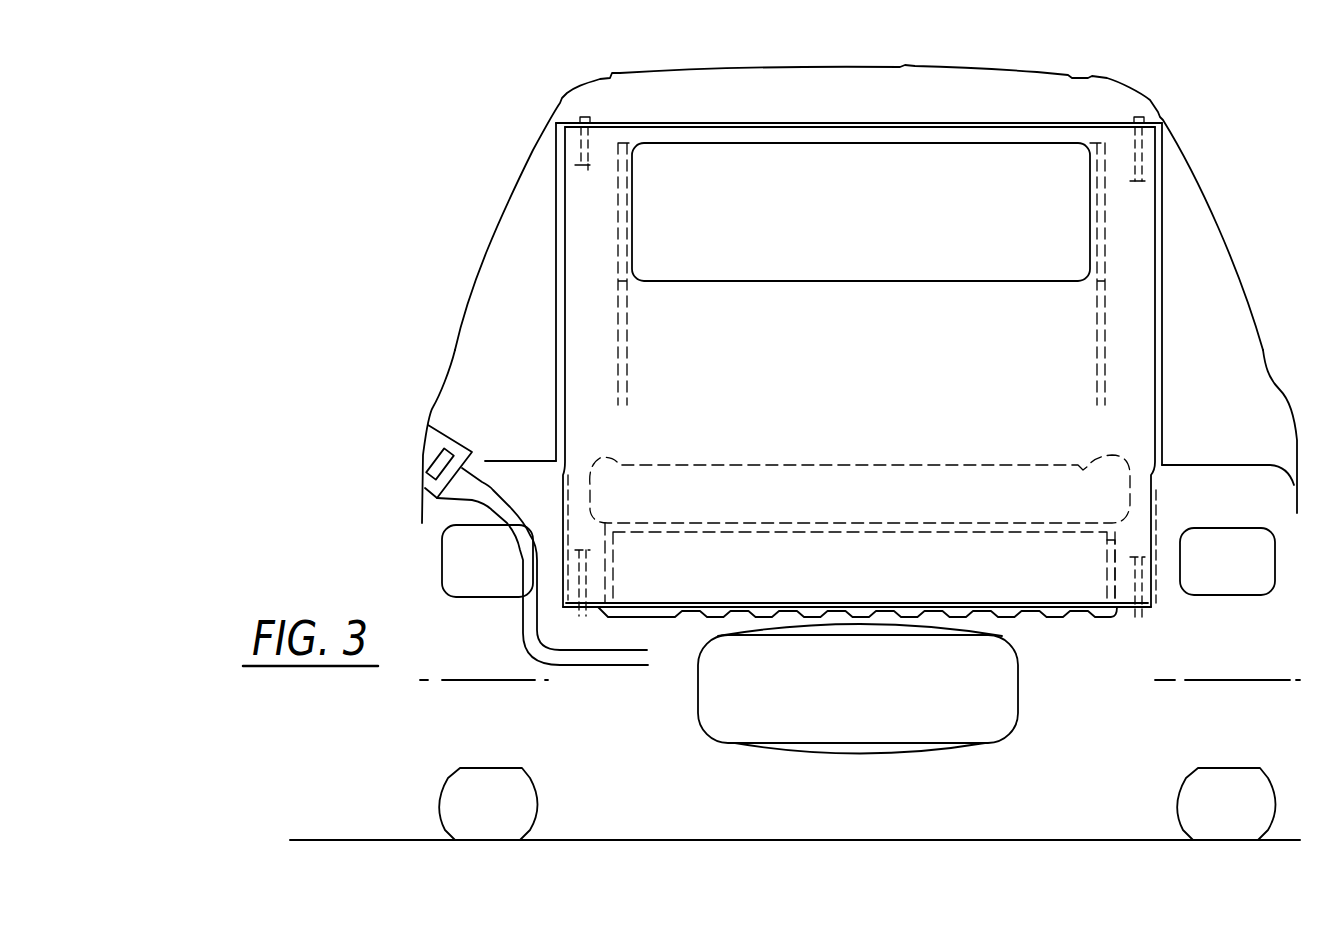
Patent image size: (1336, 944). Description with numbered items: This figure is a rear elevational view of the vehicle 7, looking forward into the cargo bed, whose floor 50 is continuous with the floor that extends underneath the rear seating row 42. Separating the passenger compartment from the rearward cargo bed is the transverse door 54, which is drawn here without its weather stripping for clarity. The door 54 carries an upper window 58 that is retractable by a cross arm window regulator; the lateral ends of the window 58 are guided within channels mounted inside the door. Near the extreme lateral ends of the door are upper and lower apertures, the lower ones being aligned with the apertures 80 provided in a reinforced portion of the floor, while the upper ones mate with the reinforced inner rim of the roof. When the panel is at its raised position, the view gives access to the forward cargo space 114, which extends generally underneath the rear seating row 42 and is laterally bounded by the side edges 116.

The vehicle 7 is at (482, 93).
The rear seating row 42 is at (935, 462).
The floor 50 is at (590, 603).
The transverse door 54 is at (1150, 235).
The upper window 58 is at (868, 251).
The apertures 80 is at (1143, 613).
The forward cargo space 114 is at (893, 576).
The side edges 116 is at (1113, 542).